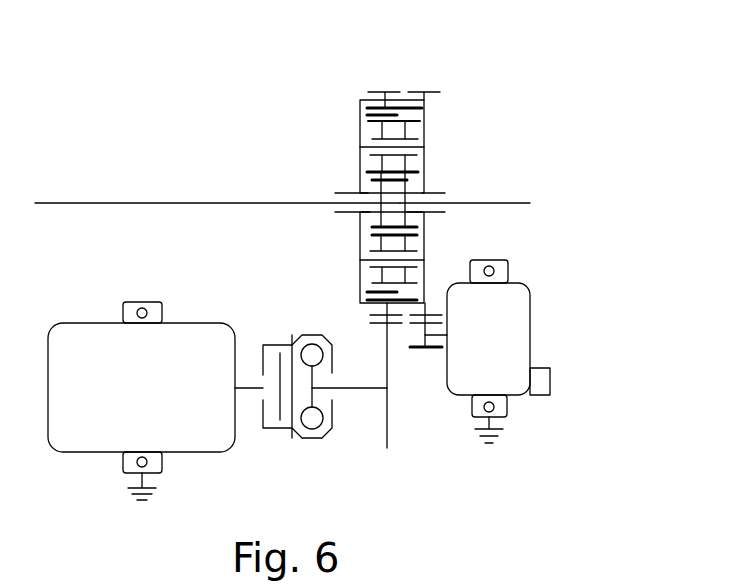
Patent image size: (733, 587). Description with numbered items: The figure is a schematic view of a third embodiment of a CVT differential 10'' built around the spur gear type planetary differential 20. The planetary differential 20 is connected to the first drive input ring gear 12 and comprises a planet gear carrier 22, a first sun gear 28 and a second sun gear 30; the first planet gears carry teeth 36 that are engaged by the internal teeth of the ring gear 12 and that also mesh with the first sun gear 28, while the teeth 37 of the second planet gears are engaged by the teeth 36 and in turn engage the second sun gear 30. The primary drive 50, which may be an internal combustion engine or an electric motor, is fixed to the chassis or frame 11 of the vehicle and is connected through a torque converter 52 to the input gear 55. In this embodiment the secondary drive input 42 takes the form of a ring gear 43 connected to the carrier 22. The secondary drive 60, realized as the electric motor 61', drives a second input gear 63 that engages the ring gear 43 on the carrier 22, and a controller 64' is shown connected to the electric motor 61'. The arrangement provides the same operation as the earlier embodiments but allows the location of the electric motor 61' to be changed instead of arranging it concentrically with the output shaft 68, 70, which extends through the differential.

The CVT differential 10'' is at (600, 100).
The chassis or frame 11 is at (157, 497).
The first drive input ring gear 12 is at (377, 91).
The planetary differential 20 is at (358, 253).
The planet gear carrier 22 is at (425, 140).
The first sun gear 28 is at (356, 186).
The second sun gear 30 is at (425, 188).
The teeth of the first planet gears 36 is at (421, 108).
The teeth of the second planet gears 37 is at (368, 120).
The secondary drive input 42 is at (425, 297).
The ring gear 43 is at (430, 91).
The primary drive 50 is at (78, 454).
The torque converter 52 is at (297, 431).
The input gear 55 is at (385, 434).
The secondary drive 60 is at (531, 334).
The electric motor 61' is at (554, 284).
The second input gear 63 is at (422, 349).
The controller 64' is at (596, 393).
The output shaft 68 is at (122, 202).
The output shaft 70 is at (530, 203).